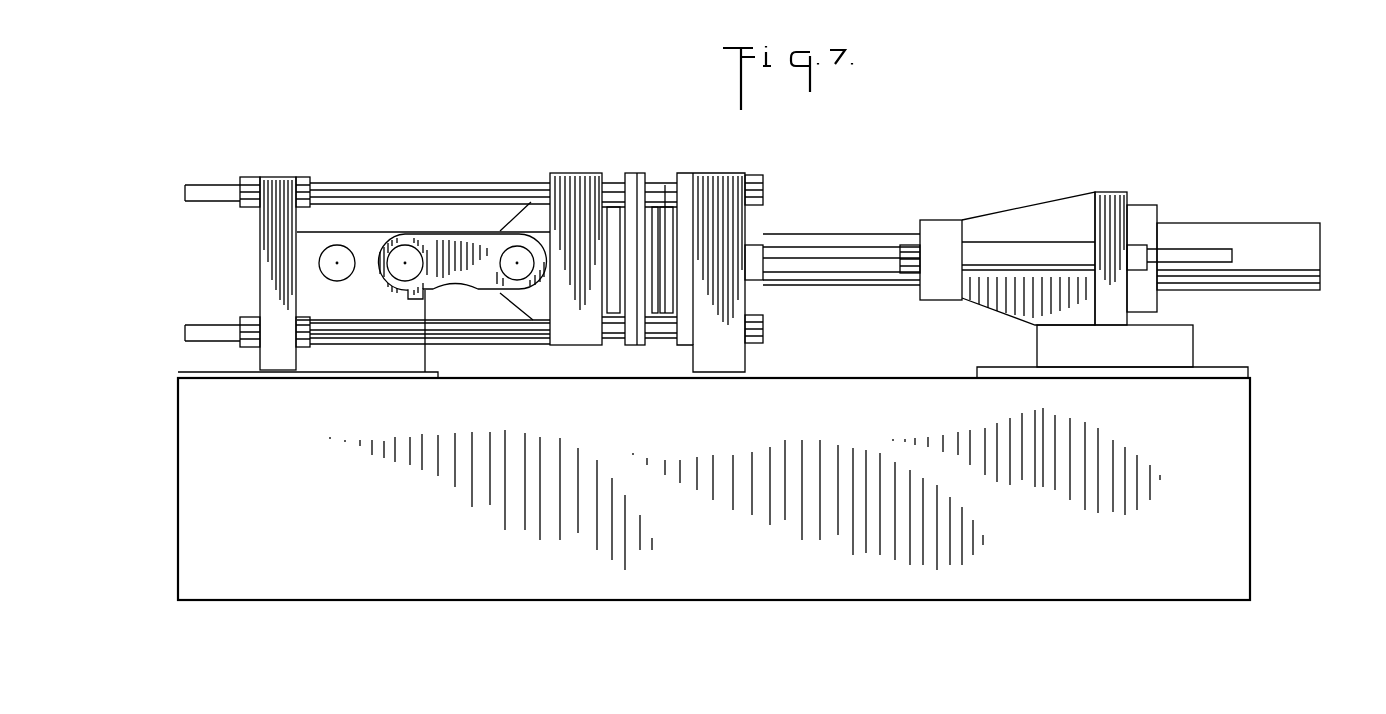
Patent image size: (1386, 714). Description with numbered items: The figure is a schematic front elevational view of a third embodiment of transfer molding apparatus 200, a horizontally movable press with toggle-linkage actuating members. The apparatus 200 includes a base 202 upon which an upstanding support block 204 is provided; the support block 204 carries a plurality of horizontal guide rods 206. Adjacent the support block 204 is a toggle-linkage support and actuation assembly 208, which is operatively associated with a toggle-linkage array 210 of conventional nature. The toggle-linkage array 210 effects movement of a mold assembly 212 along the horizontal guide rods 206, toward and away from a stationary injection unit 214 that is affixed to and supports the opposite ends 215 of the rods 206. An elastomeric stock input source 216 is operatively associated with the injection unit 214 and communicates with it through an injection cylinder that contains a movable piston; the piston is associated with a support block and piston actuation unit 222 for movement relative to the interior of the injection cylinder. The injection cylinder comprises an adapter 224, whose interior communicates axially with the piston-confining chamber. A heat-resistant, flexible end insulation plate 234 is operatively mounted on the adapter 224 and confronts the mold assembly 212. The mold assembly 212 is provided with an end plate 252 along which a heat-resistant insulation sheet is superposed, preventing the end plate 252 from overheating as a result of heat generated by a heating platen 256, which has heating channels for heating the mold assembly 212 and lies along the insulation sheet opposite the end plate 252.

The transfer molding apparatus 200 is at (1340, 328).
The base 202 is at (1230, 422).
The upstanding support block 204 is at (276, 183).
The horizontal guide rods 206 is at (375, 187).
The toggle-linkage support and actuation assembly 208 is at (323, 349).
The toggle-linkage array 210 is at (453, 242).
The mold assembly 212 is at (632, 355).
The stationary injection unit 214 is at (722, 352).
The opposite ends of the rods 215 is at (763, 180).
The elastomeric stock input source 216 is at (935, 228).
The support block and piston actuation unit 222 is at (1045, 345).
The adapter 224 is at (666, 200).
The end insulation plate 234 is at (650, 205).
The end plate 252 is at (570, 340).
The heating platen 256 is at (613, 210).